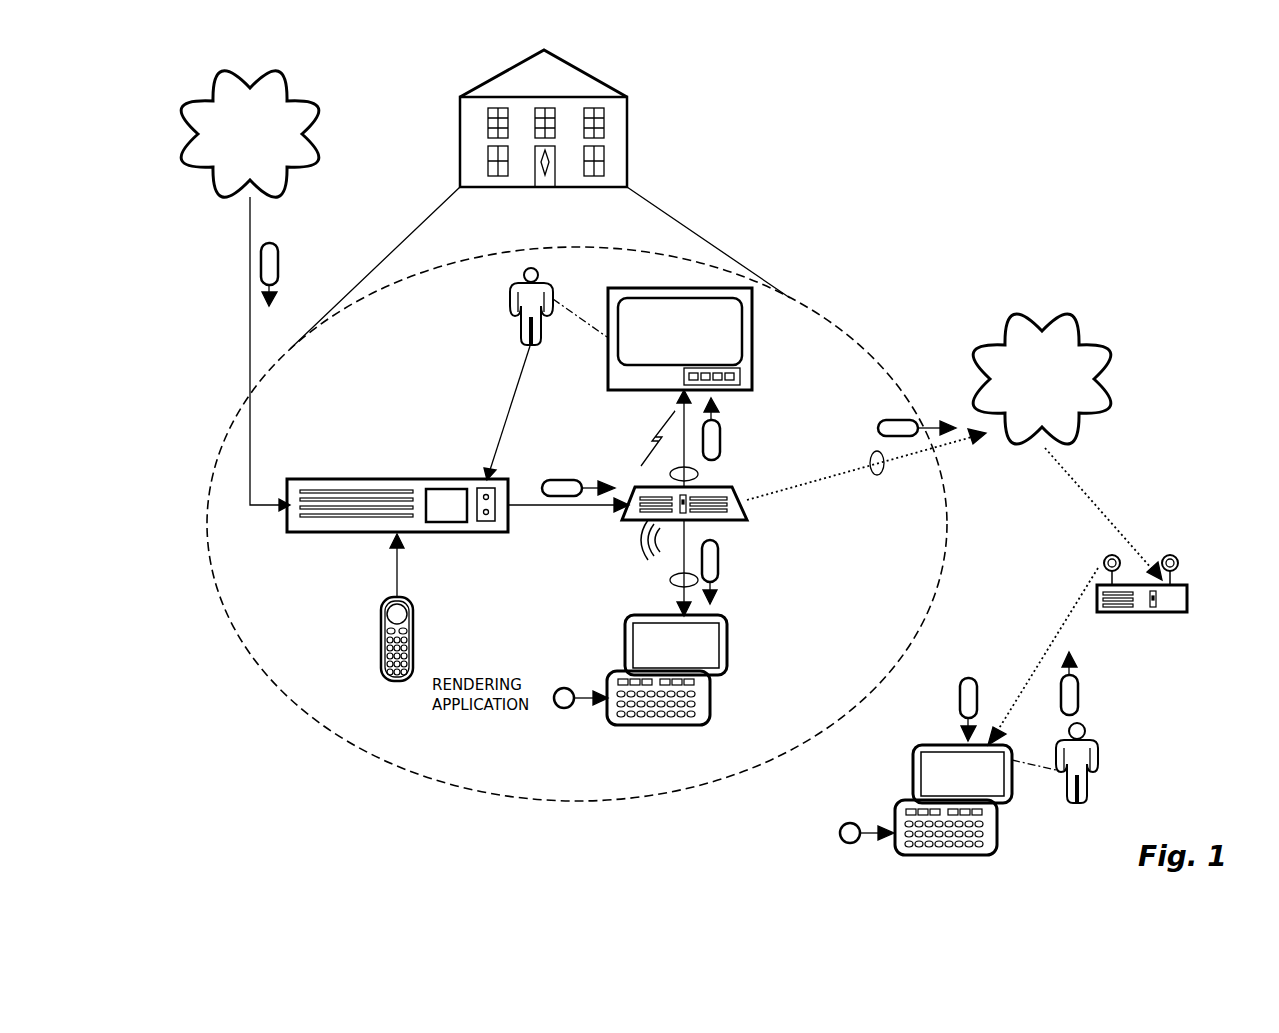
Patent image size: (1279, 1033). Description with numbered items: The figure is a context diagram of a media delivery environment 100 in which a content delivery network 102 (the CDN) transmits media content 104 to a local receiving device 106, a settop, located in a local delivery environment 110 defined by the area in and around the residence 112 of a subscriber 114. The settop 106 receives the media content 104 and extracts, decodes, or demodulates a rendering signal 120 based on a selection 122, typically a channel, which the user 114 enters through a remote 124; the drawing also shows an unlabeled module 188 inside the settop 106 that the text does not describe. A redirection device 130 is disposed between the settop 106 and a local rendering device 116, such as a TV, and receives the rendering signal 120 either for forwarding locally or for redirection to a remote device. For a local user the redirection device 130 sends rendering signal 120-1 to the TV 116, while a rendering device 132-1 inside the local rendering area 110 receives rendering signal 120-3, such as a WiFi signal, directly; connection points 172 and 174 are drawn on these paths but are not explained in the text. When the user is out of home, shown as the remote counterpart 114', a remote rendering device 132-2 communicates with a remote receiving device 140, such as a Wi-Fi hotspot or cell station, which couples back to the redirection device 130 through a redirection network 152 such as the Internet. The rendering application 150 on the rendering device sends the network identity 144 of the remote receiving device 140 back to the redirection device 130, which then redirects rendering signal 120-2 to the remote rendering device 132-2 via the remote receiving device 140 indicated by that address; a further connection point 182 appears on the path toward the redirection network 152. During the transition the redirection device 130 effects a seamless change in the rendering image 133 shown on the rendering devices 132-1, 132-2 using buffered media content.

The media delivery environment 100 is at (912, 112).
The content delivery network 102 is at (300, 86).
The media content 104 is at (278, 250).
The local receiving device 106 is at (389, 500).
The local delivery environment 110 is at (292, 745).
The residence 112 is at (627, 97).
The subscriber 114 is at (517, 374).
The remote user 114' is at (1092, 763).
The local rendering device 116 is at (752, 386).
The rendering signal 120 is at (553, 480).
The rendering signal 120-1 is at (720, 430).
The rendering signal 120-2 is at (897, 420).
The rendering signal 120-3 is at (718, 566).
The selection 122 is at (452, 546).
The remote 124 is at (368, 657).
The redirection device 130 is at (732, 490).
The rendering device 132-1 is at (727, 690).
The remote rendering device 132-2 is at (998, 812).
The rendering image 133 is at (819, 710).
The remote receiving device 140 is at (1187, 585).
The network identity 144 is at (1078, 697).
The rendering application 150 is at (564, 708).
The redirection network 152 is at (1100, 334).
The connection 172 is at (670, 474).
The connection 174 is at (670, 580).
The connection 182 is at (881, 475).
The DVR/storage module 188 is at (446, 505).